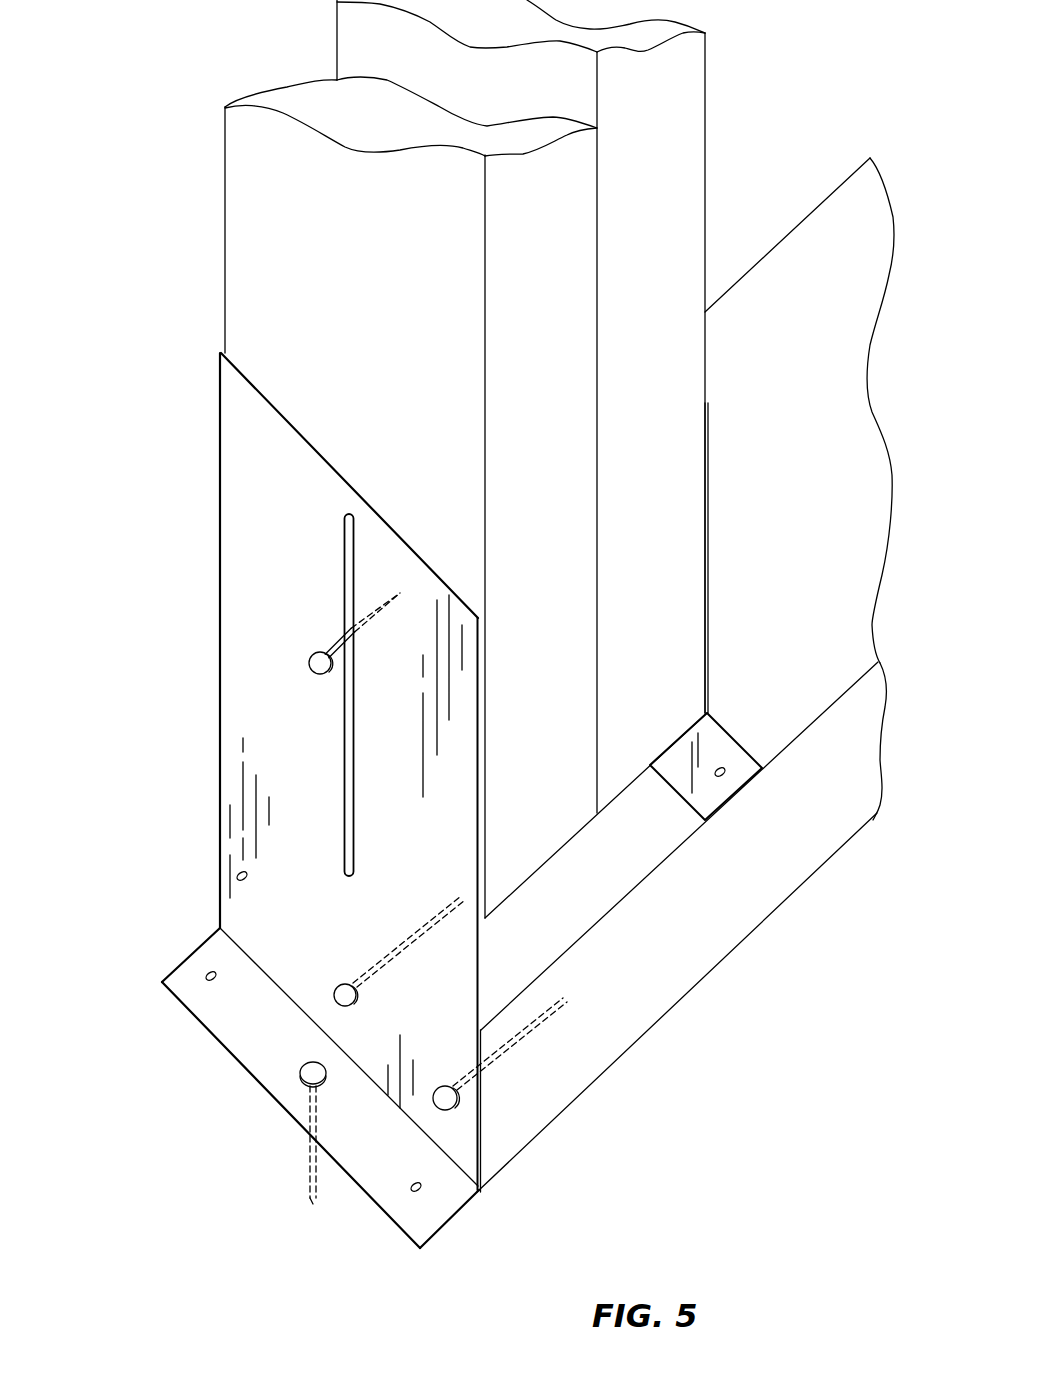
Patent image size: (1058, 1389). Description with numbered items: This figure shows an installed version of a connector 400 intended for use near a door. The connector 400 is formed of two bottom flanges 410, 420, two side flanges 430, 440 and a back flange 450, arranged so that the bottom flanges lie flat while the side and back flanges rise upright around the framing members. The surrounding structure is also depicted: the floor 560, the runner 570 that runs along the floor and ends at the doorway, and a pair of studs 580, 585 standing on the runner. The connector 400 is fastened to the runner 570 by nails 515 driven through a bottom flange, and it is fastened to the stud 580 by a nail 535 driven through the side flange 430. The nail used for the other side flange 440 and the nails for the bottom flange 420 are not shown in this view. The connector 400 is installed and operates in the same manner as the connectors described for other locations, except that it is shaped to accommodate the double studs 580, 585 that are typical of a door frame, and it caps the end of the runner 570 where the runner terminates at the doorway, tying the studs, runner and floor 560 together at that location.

The connector 400 is at (153, 841).
The bottom flange 410 is at (727, 747).
The bottom flange 420 is at (242, 1040).
The side flange 430 is at (245, 698).
The side flange 440 is at (697, 627).
The back flange 450 is at (299, 800).
The nails 515 is at (337, 998).
The nail 535 is at (338, 648).
The floor 560 is at (748, 1010).
The runner 570 is at (818, 853).
The stud 580 is at (263, 243).
The stud 585 is at (685, 203).